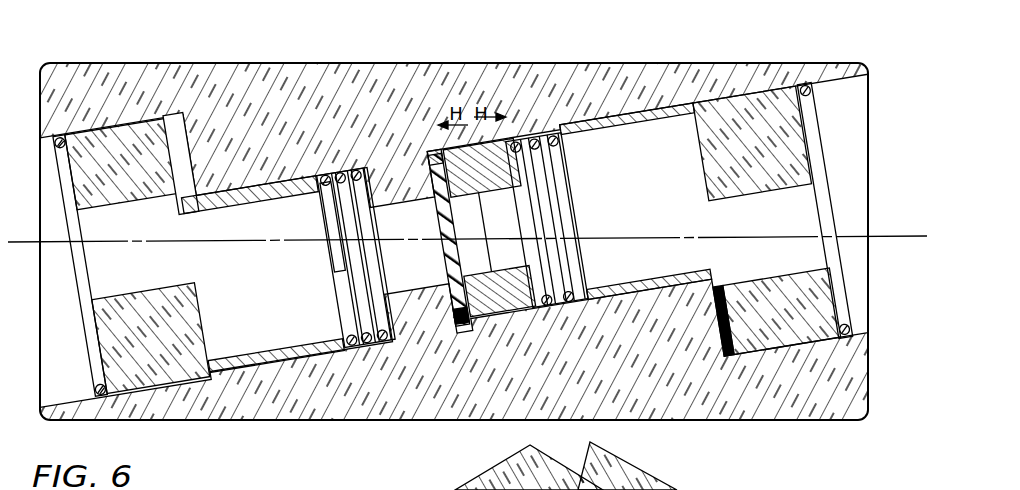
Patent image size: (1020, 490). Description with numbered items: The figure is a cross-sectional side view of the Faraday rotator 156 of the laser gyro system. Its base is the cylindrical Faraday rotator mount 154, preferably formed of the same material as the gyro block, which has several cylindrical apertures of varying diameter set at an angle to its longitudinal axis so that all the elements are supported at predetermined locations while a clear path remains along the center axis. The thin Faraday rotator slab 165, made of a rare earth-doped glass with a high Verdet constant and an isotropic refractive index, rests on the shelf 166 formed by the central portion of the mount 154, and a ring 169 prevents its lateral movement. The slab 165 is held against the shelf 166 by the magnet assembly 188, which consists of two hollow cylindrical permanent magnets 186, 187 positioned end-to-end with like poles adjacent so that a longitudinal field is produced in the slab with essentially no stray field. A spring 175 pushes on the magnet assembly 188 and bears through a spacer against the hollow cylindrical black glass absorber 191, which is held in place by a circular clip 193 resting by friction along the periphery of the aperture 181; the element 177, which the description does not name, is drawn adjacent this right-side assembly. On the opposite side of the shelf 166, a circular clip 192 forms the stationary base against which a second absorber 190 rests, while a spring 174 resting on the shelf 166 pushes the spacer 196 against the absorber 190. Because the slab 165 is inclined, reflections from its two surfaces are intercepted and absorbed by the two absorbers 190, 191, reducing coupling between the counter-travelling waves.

The Faraday rotator mount 154 is at (450, 70).
The Faraday rotator 156 is at (205, 58).
The Faraday rotator slab 165 is at (455, 267).
The shelf 166 is at (397, 186).
The ring 169 is at (467, 322).
The spring 174 is at (375, 345).
The spring 175 is at (563, 194).
The liner sleeve 177 is at (648, 290).
The aperture 181 is at (847, 141).
The hollow cylindrical permanent magnet 186 is at (448, 153).
The hollow cylindrical permanent magnet 187 is at (500, 147).
The magnet assembly 188 is at (467, 322).
The absorber 190 is at (160, 378).
The absorber 191 is at (773, 338).
The circular clip 192 is at (95, 374).
The circular clip 193 is at (845, 300).
The spacer 196 is at (282, 358).